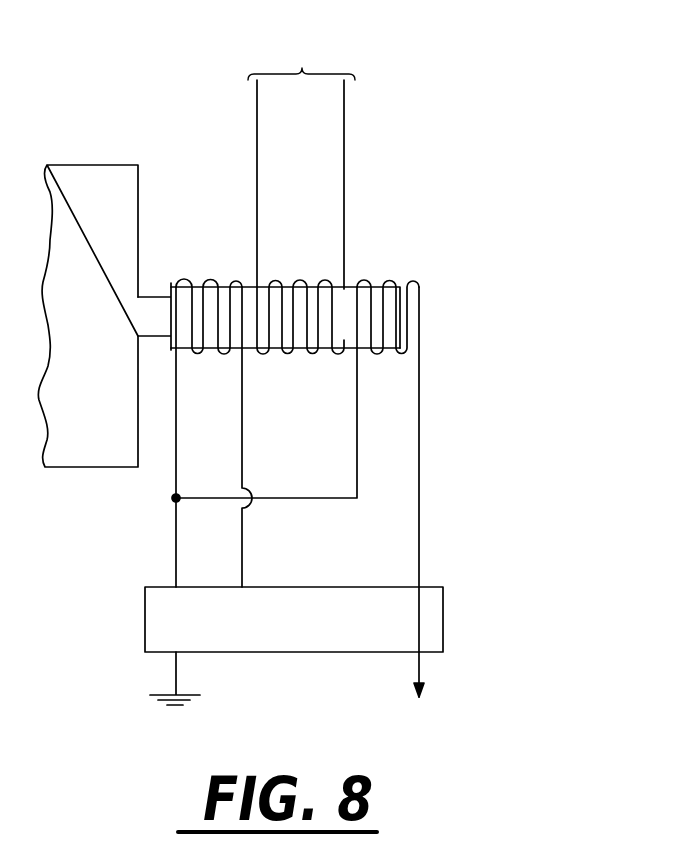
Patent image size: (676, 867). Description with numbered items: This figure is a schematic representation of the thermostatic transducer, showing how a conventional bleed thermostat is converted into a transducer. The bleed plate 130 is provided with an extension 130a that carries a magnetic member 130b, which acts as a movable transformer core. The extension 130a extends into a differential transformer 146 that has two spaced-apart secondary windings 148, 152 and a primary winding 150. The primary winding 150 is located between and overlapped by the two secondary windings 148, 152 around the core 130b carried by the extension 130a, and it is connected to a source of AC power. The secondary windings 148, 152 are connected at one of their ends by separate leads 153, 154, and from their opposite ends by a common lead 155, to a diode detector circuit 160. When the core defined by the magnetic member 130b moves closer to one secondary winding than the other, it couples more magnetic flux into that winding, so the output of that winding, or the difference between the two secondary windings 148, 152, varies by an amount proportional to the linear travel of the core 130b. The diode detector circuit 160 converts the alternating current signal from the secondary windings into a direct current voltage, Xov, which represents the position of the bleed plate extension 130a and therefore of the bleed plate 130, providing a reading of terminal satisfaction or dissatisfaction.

The bleed plate 130 is at (100, 163).
The extension 130a is at (150, 293).
The magnetic member 130b is at (209, 354).
The differential transformer 146 is at (469, 204).
The secondary winding 148 is at (210, 278).
The primary winding 150 is at (300, 278).
The secondary winding 152 is at (387, 278).
The lead 153 is at (245, 450).
The lead 154 is at (422, 458).
The common lead 155 is at (173, 553).
The diode detector circuit 160 is at (446, 620).